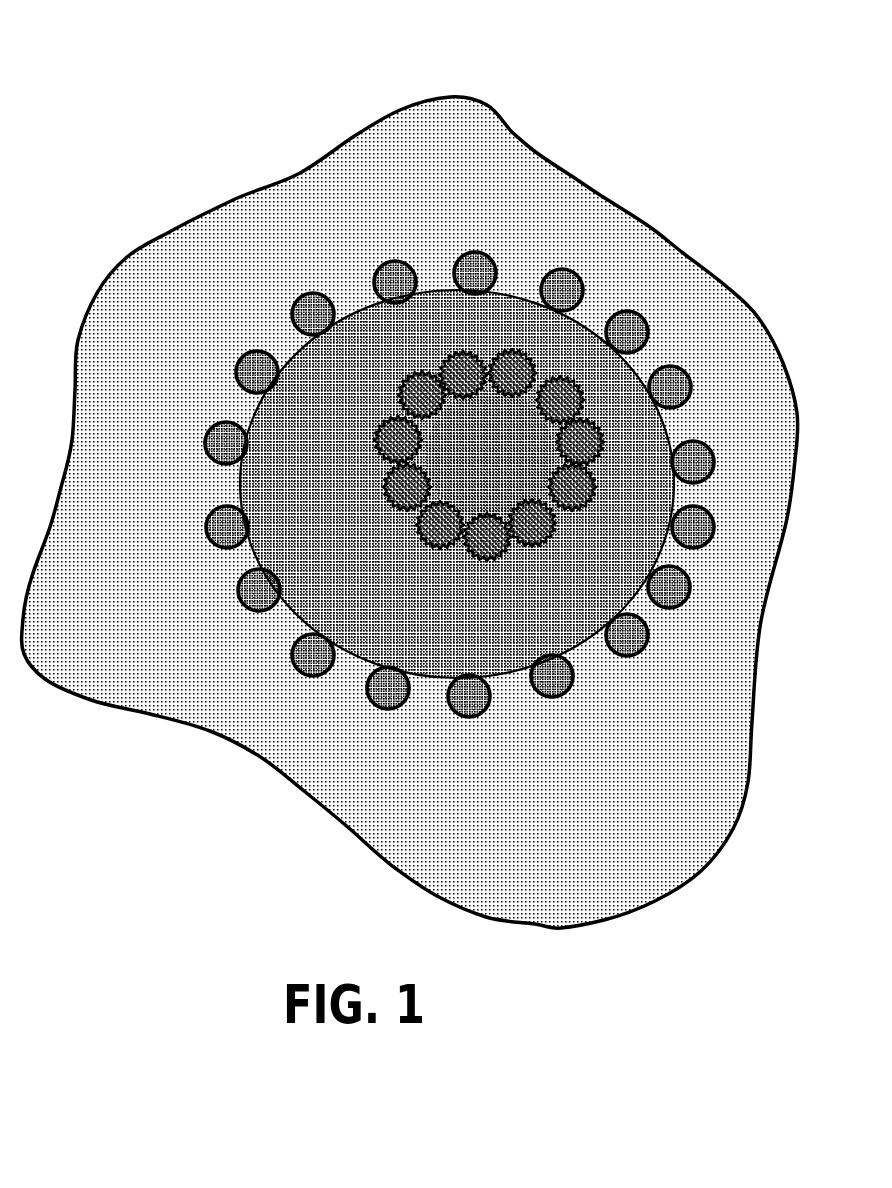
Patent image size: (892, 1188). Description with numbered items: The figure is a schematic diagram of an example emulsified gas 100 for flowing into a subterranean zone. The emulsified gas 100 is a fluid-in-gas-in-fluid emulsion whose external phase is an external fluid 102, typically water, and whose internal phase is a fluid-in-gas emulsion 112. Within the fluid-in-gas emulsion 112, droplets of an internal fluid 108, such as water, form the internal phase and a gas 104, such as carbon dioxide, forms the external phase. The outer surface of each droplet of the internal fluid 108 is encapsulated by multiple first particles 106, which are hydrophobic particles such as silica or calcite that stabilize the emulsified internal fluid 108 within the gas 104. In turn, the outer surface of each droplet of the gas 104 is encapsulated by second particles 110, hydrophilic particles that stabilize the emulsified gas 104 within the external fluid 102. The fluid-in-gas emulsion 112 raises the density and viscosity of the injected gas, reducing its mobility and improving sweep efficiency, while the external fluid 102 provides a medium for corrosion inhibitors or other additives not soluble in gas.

The emulsified gas 100 is at (426, 464).
The external fluid 102 is at (287, 731).
The gas 104 is at (457, 484).
The first particles 106 is at (513, 375).
The internal fluid 108 is at (490, 455).
The second particles 110 is at (313, 314).
The fluid-in-gas emulsion 112 is at (432, 247).